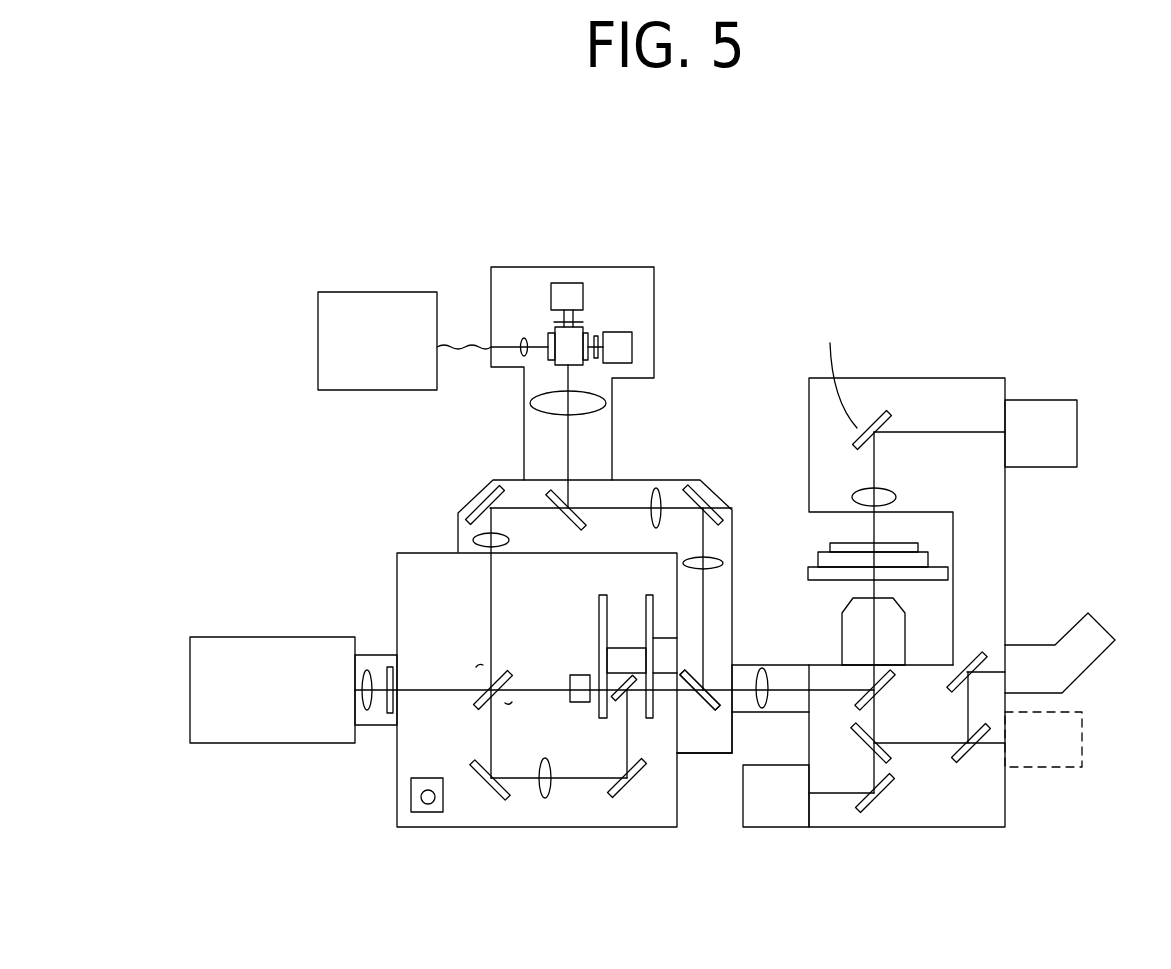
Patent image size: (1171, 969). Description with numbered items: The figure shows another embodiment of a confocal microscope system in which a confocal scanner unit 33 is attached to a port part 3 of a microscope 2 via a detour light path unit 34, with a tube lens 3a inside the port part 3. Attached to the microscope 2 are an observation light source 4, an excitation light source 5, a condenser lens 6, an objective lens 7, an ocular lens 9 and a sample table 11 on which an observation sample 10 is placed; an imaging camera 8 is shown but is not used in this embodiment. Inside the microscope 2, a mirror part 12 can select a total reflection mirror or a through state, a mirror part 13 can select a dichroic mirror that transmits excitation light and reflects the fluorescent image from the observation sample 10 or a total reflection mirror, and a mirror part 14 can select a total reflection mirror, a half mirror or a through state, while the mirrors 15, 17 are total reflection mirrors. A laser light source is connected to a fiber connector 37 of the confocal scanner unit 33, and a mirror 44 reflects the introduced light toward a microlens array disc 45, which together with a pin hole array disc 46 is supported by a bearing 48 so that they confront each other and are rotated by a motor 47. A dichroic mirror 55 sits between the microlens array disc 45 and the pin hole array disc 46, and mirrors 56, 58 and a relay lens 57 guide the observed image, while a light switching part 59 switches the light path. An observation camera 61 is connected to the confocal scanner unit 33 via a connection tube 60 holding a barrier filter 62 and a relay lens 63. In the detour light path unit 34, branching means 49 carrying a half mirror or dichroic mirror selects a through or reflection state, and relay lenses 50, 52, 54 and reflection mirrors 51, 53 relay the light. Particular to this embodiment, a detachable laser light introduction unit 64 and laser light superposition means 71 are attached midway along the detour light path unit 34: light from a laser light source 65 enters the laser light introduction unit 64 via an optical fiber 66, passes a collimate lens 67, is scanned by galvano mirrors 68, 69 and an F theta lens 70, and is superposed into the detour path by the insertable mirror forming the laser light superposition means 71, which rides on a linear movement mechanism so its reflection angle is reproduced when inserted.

The microscope 2 is at (898, 272).
The port part 3 is at (748, 663).
The tube lens 3a is at (762, 668).
The observation light source 4 is at (1077, 427).
The excitation light source 5 is at (773, 828).
The condenser lens 6 is at (857, 490).
The objective lens 7 is at (907, 623).
The imaging camera 8 is at (1082, 738).
The ocular lens 9 is at (1100, 623).
The observation sample 10 is at (842, 543).
The sample table 11 is at (818, 555).
The mirror part 12 is at (862, 700).
The mirror part 13 is at (890, 755).
The mirror part 14 is at (968, 760).
The mirror 15 is at (985, 652).
The mirror 17 is at (877, 797).
The confocal scanner unit 33 is at (393, 580).
The detour light path unit 34 is at (510, 478).
The fiber connector 37 is at (418, 830).
The mirror 44 is at (575, 703).
The microlens array disc 45 is at (628, 700).
The pin hole array disc 46 is at (680, 713).
The motor 47 is at (707, 705).
The bearing 48 is at (618, 640).
The branching means 49 is at (722, 715).
The relay lens 50 is at (730, 505).
The reflection mirror 51 is at (720, 557).
The relay lens 52 is at (657, 490).
The reflection mirror 53 is at (487, 495).
The relay lens 54 is at (477, 537).
The dichroic mirror 55 is at (650, 718).
The mirror 56 is at (632, 797).
The relay lens 57 is at (543, 800).
The mirror 58 is at (487, 797).
The light switching part 59 is at (480, 703).
The connection tube 60 is at (377, 650).
The observation camera 61 is at (255, 635).
The barrier filter 62 is at (392, 713).
The relay lens 63 is at (360, 707).
The laser light introduction unit 64 is at (603, 267).
The laser light source 65 is at (380, 292).
The optical fiber 66 is at (455, 345).
The collimate lens 67 is at (524, 338).
The galvano mirror 68 is at (557, 283).
The galvano mirror 69 is at (625, 332).
The F theta lens 70 is at (600, 395).
The laser light superposition means 71 is at (567, 490).